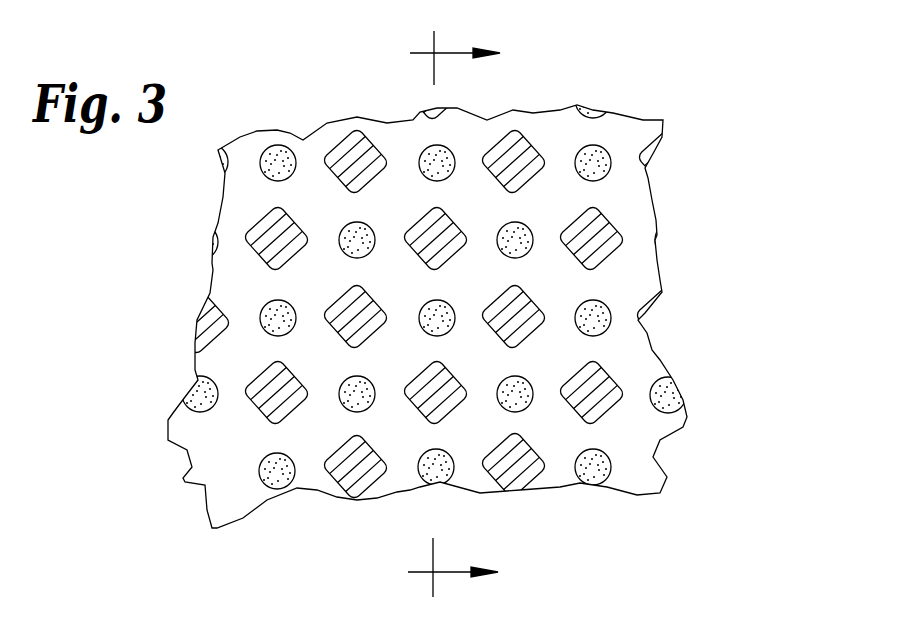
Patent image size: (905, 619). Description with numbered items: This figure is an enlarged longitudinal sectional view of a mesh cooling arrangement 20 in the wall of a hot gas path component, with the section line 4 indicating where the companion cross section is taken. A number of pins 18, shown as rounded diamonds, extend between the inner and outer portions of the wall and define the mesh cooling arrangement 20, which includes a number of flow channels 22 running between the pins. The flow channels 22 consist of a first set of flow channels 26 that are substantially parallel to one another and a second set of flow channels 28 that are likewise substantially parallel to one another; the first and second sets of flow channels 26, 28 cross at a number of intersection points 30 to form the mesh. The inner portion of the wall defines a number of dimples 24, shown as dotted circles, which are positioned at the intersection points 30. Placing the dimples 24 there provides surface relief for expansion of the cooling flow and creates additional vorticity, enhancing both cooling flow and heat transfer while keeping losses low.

The section line 4- 4 is at (450, 314).
The pins 18 is at (250, 247).
The mesh cooling arrangement 20 is at (748, 80).
The flow channels 22 is at (307, 140).
The dimples 24 is at (262, 172).
The first set of flow channels 26 is at (320, 197).
The second set of flow channels 28 is at (398, 193).
The intersection points 30 is at (252, 343).